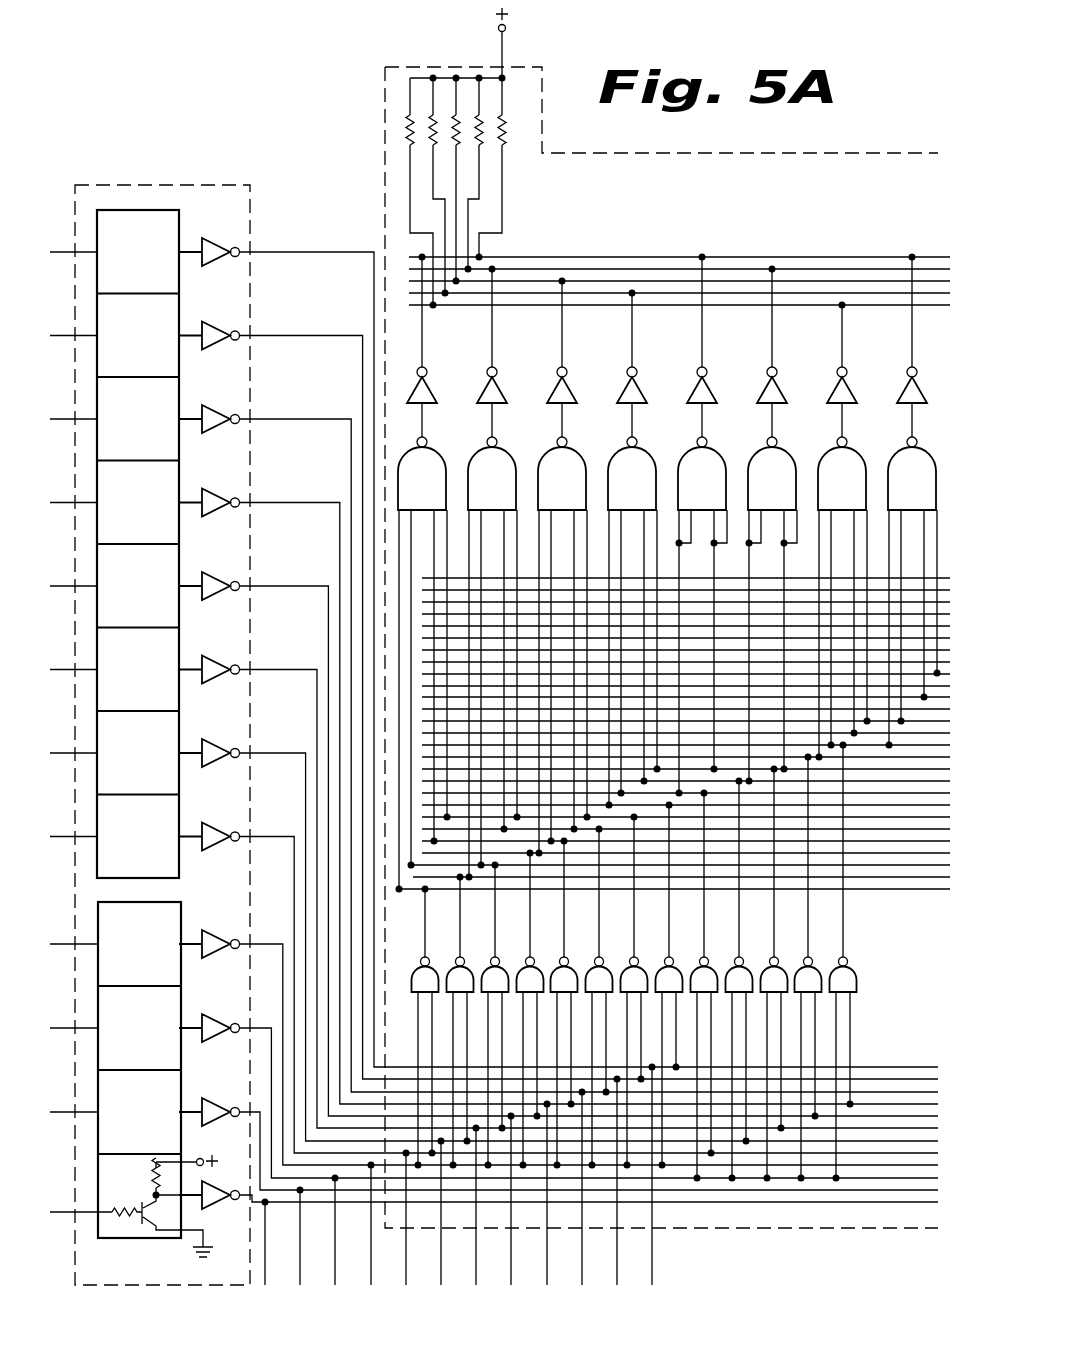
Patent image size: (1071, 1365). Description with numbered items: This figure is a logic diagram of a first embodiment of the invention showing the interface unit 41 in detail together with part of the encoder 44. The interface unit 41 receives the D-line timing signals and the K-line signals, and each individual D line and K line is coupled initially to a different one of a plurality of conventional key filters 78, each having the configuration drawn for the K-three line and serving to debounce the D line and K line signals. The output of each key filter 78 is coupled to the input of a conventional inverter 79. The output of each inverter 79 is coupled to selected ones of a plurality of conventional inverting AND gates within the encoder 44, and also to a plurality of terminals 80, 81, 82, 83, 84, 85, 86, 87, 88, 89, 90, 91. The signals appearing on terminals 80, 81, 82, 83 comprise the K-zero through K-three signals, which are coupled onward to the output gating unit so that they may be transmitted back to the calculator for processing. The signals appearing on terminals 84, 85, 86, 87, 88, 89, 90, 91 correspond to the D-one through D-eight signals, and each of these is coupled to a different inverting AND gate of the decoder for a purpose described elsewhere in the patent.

The interface unit 41 is at (202, 181).
The encoder 44 is at (797, 151).
The key filter 78 is at (127, 1230).
The inverter 79 is at (207, 930).
The terminal 80 is at (371, 1284).
The terminal 81 is at (335, 1284).
The terminal 82 is at (300, 1284).
The terminal 83 is at (265, 1284).
The terminal 84 is at (406, 1284).
The terminal 85 is at (441, 1284).
The terminal 86 is at (476, 1284).
The terminal 87 is at (511, 1284).
The terminal 88 is at (547, 1284).
The terminal 89 is at (582, 1284).
The terminal 90 is at (617, 1284).
The terminal 91 is at (652, 1284).